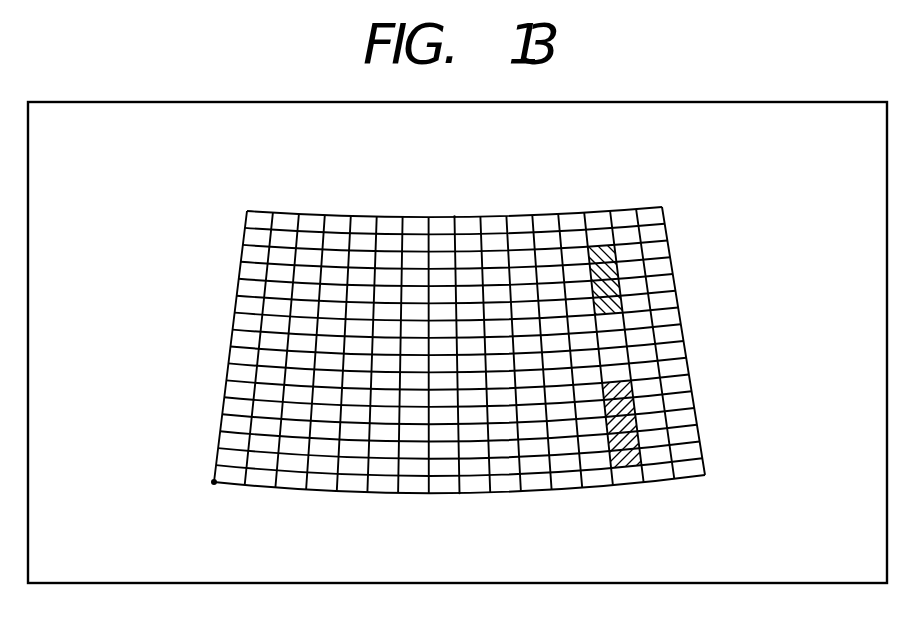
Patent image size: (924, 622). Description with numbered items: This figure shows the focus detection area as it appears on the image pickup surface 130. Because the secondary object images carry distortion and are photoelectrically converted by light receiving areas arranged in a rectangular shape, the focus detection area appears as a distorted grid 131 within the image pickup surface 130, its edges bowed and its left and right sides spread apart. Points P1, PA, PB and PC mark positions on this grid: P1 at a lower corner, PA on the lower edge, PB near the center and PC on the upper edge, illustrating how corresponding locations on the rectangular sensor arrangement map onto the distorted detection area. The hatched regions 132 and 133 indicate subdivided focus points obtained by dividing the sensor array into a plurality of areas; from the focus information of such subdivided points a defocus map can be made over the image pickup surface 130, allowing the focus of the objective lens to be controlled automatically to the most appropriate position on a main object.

The image pickup surface 130 is at (762, 101).
The grid pattern of projected image 131 is at (600, 491).
The subdivided focus point area 132 is at (639, 424).
The subdivided focus point area 133 is at (620, 271).
The corner point of grid P1 is at (214, 482).
The bottom edge point of grid PA is at (459, 495).
The center point of grid PB is at (455, 353).
The top edge point of grid PC is at (454, 216).